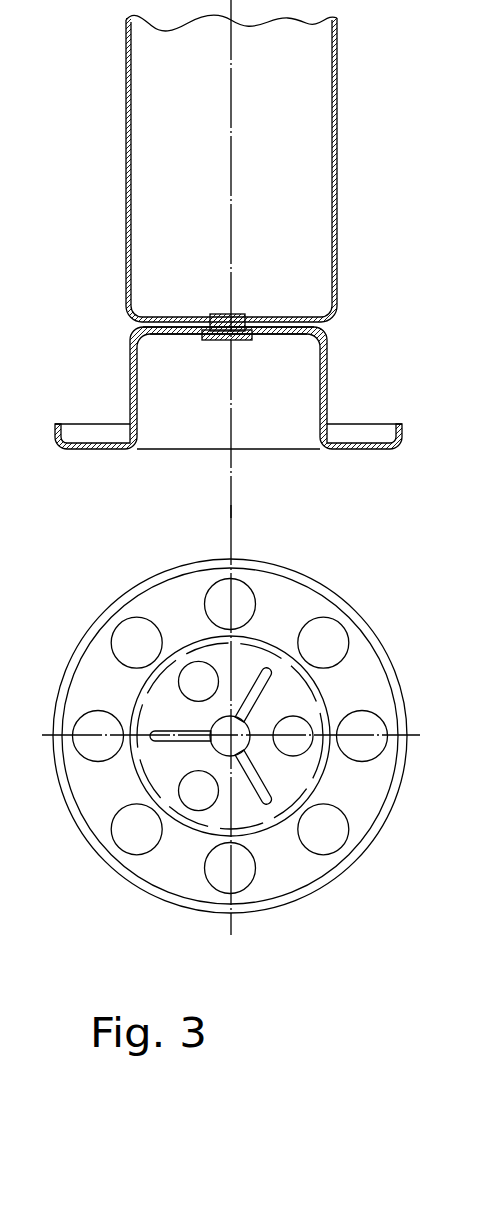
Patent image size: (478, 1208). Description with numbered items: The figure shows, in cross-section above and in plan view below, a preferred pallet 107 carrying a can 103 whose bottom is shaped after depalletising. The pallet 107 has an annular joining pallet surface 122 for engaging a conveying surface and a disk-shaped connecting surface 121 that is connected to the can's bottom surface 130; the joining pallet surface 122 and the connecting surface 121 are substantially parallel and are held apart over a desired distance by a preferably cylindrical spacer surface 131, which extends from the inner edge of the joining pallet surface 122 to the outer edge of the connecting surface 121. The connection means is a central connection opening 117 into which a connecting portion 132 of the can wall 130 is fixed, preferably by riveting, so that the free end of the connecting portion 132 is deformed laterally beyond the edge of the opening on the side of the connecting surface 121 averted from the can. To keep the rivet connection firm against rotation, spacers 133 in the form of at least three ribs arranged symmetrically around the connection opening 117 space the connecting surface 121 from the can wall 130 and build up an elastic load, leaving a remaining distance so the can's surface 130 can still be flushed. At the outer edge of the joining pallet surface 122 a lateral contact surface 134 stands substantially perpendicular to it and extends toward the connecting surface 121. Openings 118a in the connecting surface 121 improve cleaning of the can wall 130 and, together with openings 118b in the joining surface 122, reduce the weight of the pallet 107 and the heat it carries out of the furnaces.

The can 103 is at (344, 190).
The pallet 107 is at (349, 456).
The connection opening 117 is at (214, 718).
The openings in the connecting surface 118a is at (199, 659).
The openings in the joining surface 118b is at (364, 764).
The connecting surface 121 is at (295, 316).
The joining pallet surface 122 is at (86, 452).
The bottom surface of the can 130 is at (302, 333).
The spacer surface 131 is at (331, 384).
The connecting portion 132 is at (222, 343).
The spacers 133 is at (150, 313).
The lateral contact surface 134 is at (404, 438).